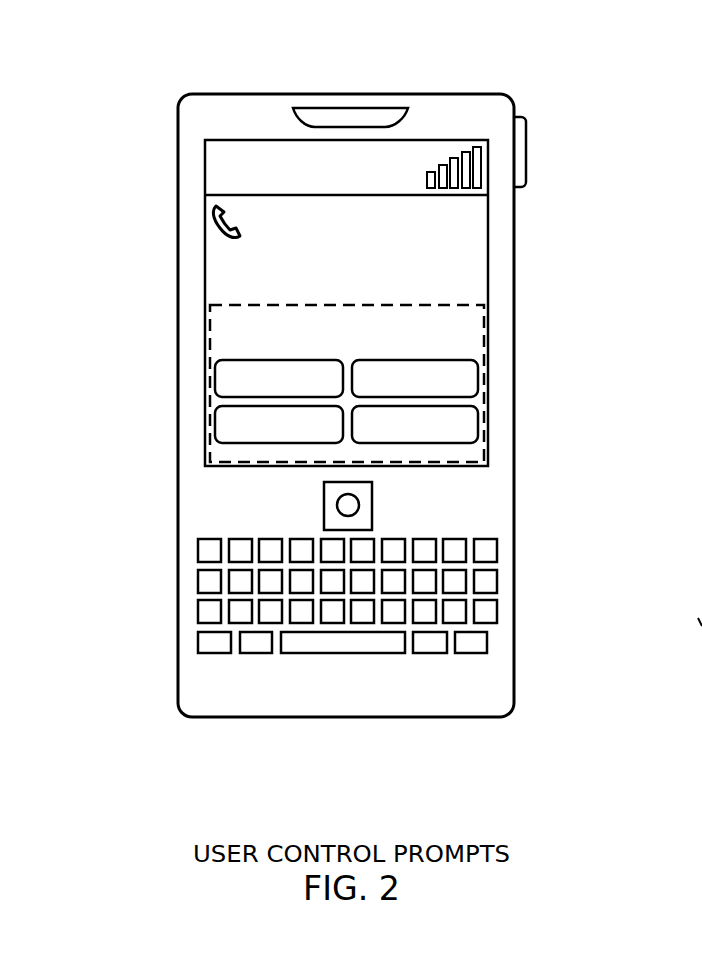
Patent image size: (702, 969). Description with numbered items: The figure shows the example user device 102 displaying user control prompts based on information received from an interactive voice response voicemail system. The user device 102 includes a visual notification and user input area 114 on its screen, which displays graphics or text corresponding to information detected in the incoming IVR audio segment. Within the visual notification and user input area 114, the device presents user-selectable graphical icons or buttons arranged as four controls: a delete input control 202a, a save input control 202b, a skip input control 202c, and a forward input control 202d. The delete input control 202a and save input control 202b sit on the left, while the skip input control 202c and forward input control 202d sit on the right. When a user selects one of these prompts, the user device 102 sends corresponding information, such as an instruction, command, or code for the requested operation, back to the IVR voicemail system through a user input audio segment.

The user device 102 is at (218, 94).
The visual notification and user input area 114 is at (470, 302).
The delete input control 202a is at (245, 358).
The save input control 202b is at (252, 444).
The skip input control 202c is at (448, 358).
The forward input control 202d is at (458, 444).